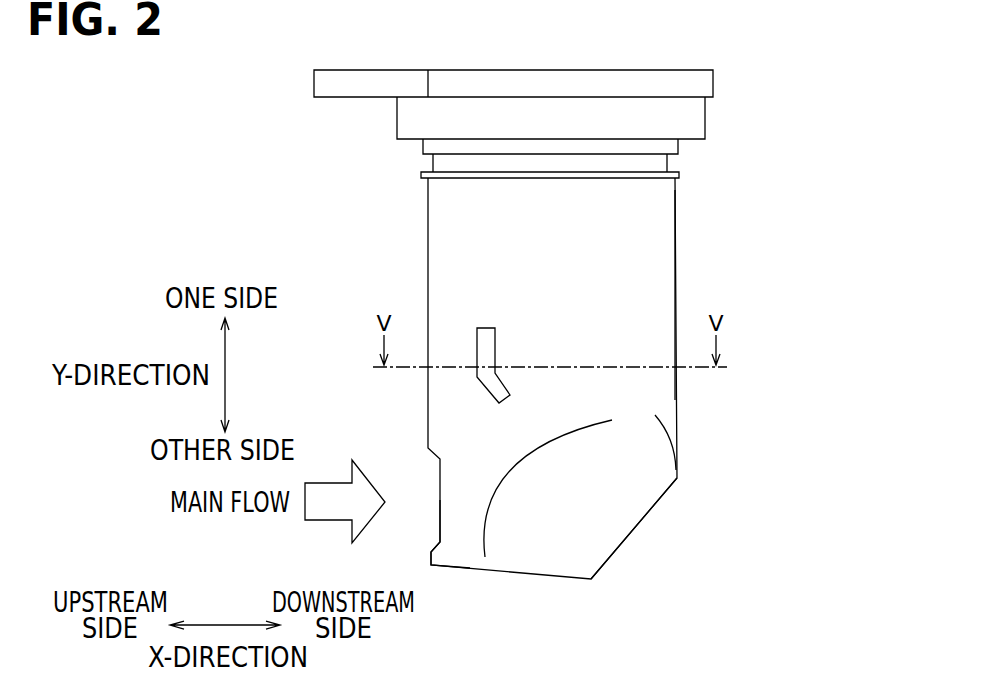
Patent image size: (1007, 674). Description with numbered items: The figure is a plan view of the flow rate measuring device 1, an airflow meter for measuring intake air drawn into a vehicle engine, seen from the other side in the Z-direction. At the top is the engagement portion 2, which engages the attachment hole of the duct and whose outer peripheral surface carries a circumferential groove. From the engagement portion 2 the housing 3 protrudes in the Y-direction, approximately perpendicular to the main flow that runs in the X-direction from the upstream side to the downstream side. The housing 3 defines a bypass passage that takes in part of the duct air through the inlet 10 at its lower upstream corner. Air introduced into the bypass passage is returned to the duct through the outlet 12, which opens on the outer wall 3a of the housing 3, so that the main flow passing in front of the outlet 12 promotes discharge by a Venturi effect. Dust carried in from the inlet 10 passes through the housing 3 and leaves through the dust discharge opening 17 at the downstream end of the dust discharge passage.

The flow rate measuring device 1 is at (788, 69).
The engagement portion 2 is at (667, 163).
The housing 3 is at (675, 270).
The outer wall 3a is at (667, 227).
The inlet 10 is at (440, 498).
The outlet 12 is at (485, 340).
The dust discharge opening 17 is at (633, 528).